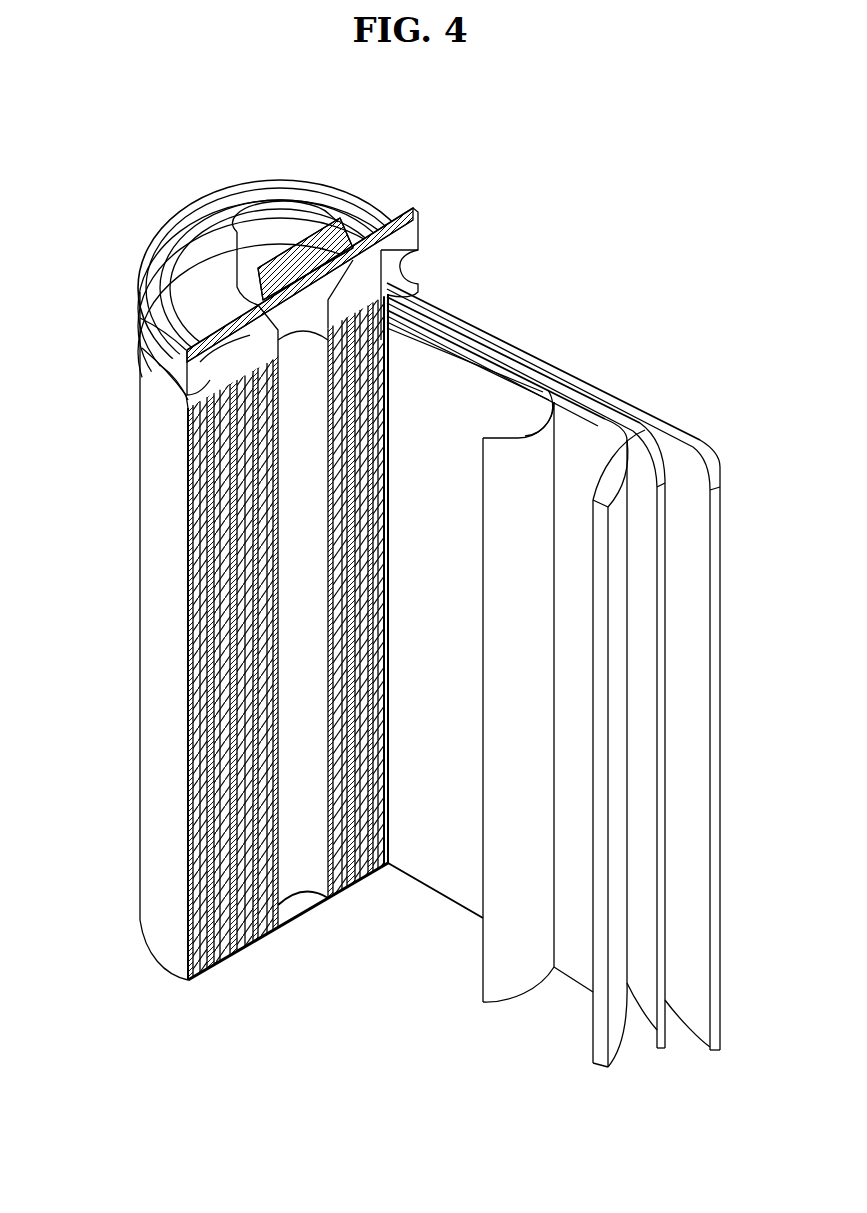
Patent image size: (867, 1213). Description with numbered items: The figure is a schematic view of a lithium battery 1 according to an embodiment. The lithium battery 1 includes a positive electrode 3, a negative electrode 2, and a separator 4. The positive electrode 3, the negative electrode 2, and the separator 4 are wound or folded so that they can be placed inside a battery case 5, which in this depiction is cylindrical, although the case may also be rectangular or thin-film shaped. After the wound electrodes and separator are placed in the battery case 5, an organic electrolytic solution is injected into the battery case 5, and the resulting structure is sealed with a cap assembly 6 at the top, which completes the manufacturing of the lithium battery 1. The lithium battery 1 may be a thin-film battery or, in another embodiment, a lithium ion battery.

The lithium battery 1 is at (573, 203).
The negative electrode 2 is at (692, 450).
The positive electrode 3 is at (613, 447).
The separator 4 is at (520, 442).
The battery case 5 is at (145, 628).
The cap assembly 6 is at (270, 228).